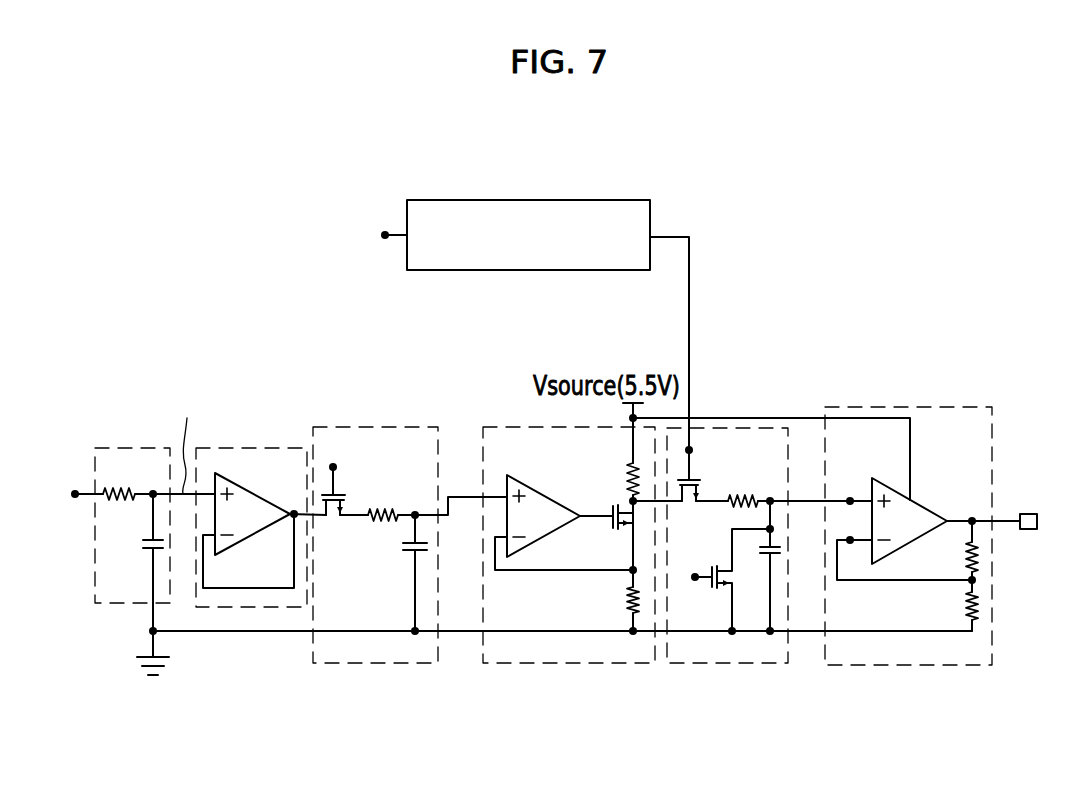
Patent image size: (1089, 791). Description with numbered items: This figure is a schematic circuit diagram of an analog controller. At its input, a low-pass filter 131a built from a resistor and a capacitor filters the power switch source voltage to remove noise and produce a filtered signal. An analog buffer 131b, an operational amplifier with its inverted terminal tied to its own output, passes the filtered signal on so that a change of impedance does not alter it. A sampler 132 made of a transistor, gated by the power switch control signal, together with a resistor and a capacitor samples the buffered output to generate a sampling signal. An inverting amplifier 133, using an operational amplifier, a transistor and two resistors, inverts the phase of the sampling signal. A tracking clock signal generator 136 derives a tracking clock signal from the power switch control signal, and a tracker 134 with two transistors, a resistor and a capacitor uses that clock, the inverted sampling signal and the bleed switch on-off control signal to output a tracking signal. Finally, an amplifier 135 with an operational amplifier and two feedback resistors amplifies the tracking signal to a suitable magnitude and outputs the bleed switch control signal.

The low-pass filter 131a is at (125, 448).
The analog buffer 131b is at (268, 448).
The sampler 132 is at (390, 663).
The inverting amplifier 133 is at (630, 663).
The tracker 134 is at (738, 663).
The amplifier 135 is at (940, 665).
The tracking clock signal generator 136 is at (622, 200).